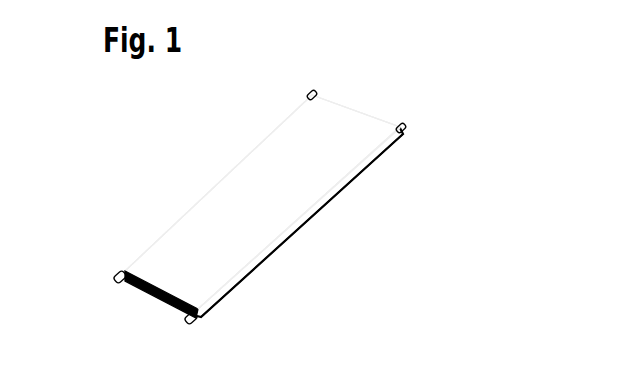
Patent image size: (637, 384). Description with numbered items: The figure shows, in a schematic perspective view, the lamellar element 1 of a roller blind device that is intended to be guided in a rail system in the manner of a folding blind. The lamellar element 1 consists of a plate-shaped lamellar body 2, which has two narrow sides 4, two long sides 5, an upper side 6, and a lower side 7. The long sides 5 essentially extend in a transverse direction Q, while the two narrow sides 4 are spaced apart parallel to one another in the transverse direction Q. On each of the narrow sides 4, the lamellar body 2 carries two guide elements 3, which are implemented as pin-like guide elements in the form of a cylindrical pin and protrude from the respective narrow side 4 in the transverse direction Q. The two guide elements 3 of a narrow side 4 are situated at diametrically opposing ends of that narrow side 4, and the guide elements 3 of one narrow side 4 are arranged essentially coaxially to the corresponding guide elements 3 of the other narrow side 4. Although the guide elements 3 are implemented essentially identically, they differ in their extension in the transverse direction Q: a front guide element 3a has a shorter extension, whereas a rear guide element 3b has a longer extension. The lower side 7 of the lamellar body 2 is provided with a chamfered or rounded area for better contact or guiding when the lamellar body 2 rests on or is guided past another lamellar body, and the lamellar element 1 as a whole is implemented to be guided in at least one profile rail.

The lamellar element 1 is at (383, 65).
The lamellar body 2 is at (240, 175).
The guide elements 3 is at (328, 95).
The front guide element 3a is at (110, 275).
The rear guide element 3b is at (195, 327).
The narrow sides 4 is at (125, 288).
The long sides 5 is at (388, 155).
The upper side 6 is at (165, 247).
The lower side 7 is at (256, 286).
The transverse direction Q is at (137, 314).